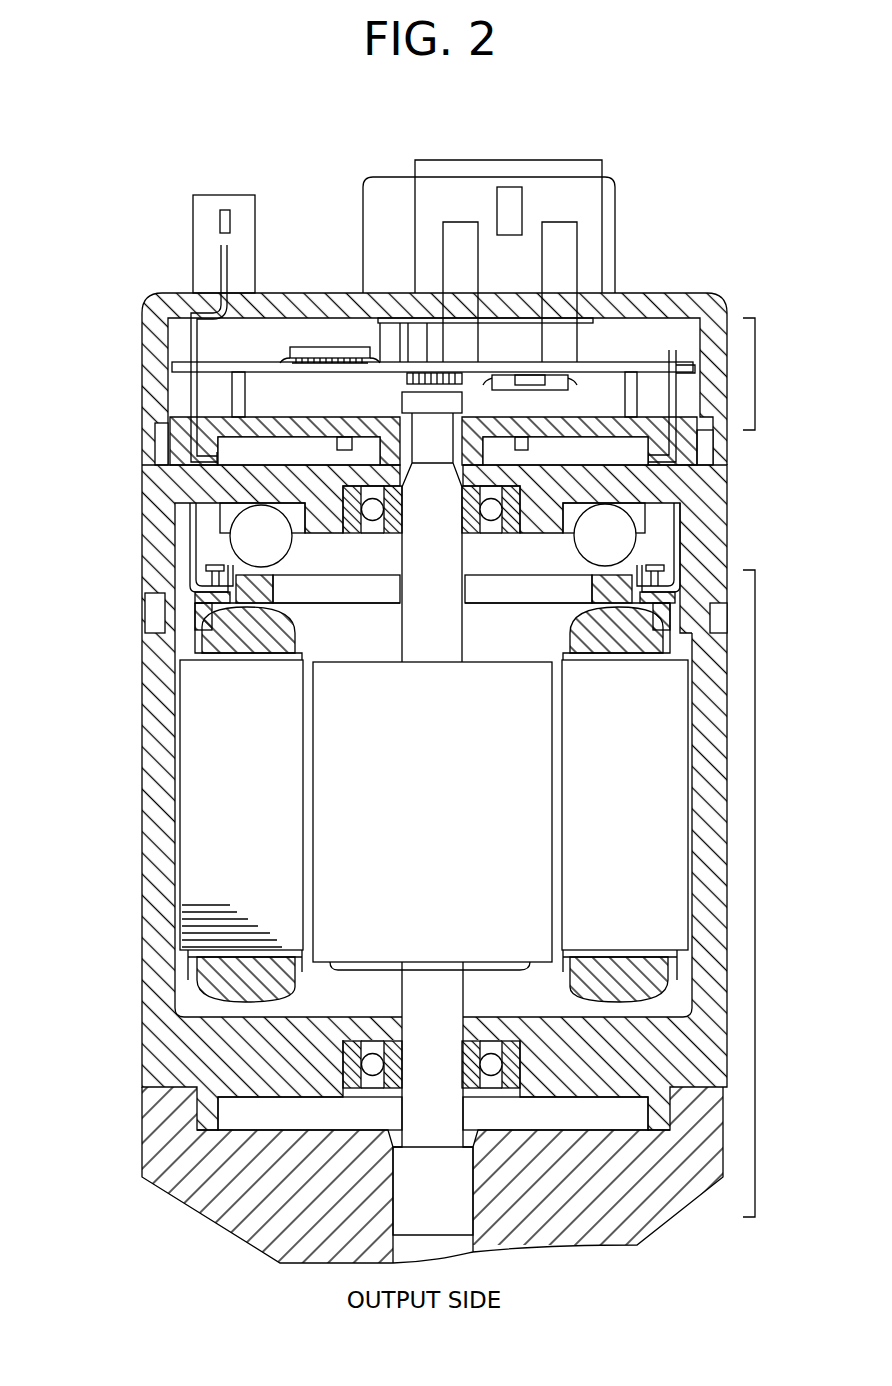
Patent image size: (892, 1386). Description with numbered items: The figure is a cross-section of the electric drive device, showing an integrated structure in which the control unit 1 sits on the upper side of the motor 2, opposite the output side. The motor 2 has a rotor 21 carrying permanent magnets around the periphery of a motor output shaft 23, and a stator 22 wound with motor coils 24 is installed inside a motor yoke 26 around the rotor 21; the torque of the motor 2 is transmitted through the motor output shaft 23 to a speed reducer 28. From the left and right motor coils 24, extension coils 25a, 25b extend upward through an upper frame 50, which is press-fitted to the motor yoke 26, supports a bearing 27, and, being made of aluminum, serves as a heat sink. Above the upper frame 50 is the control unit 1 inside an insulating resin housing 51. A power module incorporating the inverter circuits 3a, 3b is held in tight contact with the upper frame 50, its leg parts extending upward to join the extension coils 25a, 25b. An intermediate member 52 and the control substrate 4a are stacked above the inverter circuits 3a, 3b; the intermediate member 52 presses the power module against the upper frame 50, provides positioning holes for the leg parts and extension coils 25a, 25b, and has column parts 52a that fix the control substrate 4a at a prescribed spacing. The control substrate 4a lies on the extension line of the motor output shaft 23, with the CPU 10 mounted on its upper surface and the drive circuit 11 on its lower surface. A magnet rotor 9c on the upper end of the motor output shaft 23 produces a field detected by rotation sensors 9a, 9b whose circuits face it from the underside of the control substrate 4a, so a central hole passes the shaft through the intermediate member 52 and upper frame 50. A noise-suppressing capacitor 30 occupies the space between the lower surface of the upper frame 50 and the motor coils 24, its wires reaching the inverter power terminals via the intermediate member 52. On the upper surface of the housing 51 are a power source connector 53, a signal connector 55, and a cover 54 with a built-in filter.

The control unit 1 is at (765, 374).
The motor 2 is at (765, 893).
The inverter circuit 3a is at (335, 442).
The inverter circuit 3b is at (528, 444).
The control substrate 4a is at (528, 362).
The rotation sensor 9a is at (410, 380).
The rotation sensor 9b is at (397, 407).
The magnet rotor 9c is at (418, 418).
The CPU 10 is at (290, 352).
The drive circuit 11 is at (568, 386).
The rotor 21 is at (552, 808).
The stator 22 is at (303, 775).
The motor output shaft 23 is at (470, 985).
The motor coil 24 is at (295, 635).
The extension coil 25a is at (165, 540).
The extension coil 25b is at (712, 552).
The motor yoke 26 is at (141, 960).
The bearing 27 is at (478, 534).
The speed reducer 28 is at (141, 1135).
The capacitor 30 is at (290, 545).
The upper frame 50 is at (142, 486).
The housing 51 is at (142, 393).
The intermediate member 52 is at (720, 418).
The column part 52a is at (247, 384).
The power source connector 53 is at (443, 160).
The cover 54 is at (385, 177).
The signal connector 55 is at (213, 195).